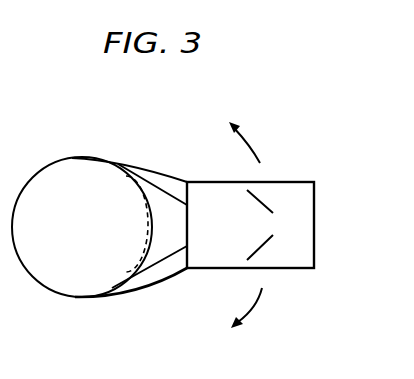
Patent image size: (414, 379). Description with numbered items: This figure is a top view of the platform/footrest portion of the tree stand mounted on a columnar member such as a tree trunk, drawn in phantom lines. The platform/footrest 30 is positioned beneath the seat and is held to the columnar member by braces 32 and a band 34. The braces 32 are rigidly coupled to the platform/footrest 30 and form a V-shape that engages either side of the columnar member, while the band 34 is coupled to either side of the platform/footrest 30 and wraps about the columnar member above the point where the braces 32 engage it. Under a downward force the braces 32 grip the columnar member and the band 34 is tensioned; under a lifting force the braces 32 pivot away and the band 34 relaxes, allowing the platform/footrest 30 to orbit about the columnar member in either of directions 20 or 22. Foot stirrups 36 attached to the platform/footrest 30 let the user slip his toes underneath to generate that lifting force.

The direction 20 is at (253, 307).
The direction 22 is at (253, 143).
The platform/footrest 30 is at (295, 182).
The braces 32 is at (142, 260).
The band 34 is at (130, 158).
The foot stirrups 36 is at (257, 250).